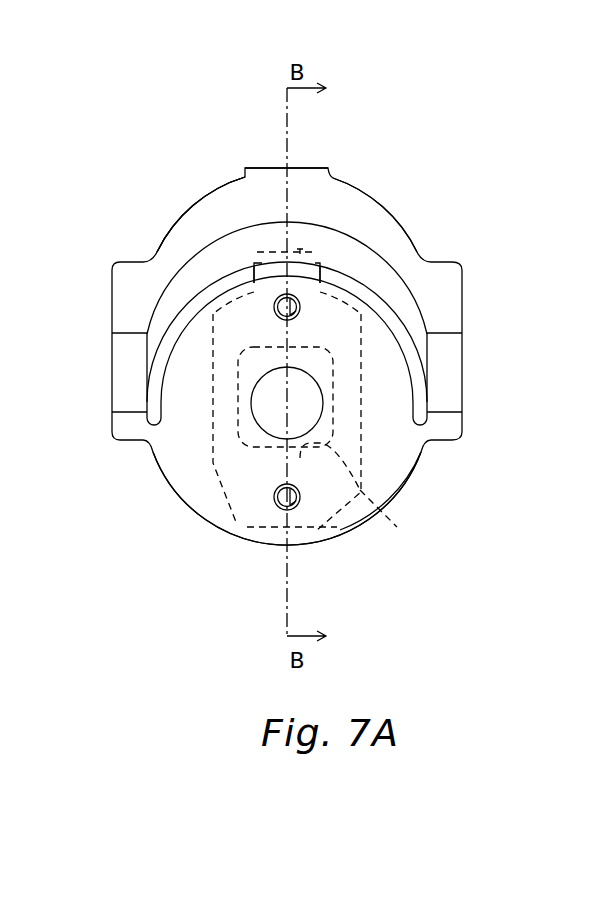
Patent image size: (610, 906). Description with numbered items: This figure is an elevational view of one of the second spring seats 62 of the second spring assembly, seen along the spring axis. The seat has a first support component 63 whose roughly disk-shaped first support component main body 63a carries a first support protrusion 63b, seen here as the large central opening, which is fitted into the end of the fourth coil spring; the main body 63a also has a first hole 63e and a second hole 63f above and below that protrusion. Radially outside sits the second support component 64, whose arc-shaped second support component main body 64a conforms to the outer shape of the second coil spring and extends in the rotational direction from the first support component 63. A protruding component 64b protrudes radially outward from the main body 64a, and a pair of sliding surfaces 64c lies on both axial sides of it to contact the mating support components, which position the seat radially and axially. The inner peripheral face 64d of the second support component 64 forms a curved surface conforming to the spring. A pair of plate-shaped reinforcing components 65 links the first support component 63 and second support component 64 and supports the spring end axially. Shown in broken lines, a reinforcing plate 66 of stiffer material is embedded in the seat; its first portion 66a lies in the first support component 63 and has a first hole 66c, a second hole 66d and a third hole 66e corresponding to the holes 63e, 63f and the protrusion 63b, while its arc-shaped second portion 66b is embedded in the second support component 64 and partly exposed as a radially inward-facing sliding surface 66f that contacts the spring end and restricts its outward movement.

The second spring seat 62 is at (417, 206).
The first support component 63 is at (409, 478).
The first support component main body 63a is at (394, 445).
The first support protrusion 63b is at (273, 413).
The first hole 63e is at (299, 306).
The second hole 63f is at (298, 497).
The second support component 64 is at (312, 170).
The second support component main body 64a is at (230, 256).
The protruding component 64b is at (268, 178).
The sliding surface 64c is at (203, 200).
The inner peripheral face 64d is at (186, 240).
The reinforcing component 65 is at (126, 355).
The reinforcing plate 66 is at (236, 515).
The first portion 66a is at (250, 527).
The second portion 66b is at (300, 246).
The first hole 66c is at (315, 263).
The second hole 66d is at (294, 503).
The third hole 66e is at (397, 527).
The sliding surface 66f is at (262, 262).